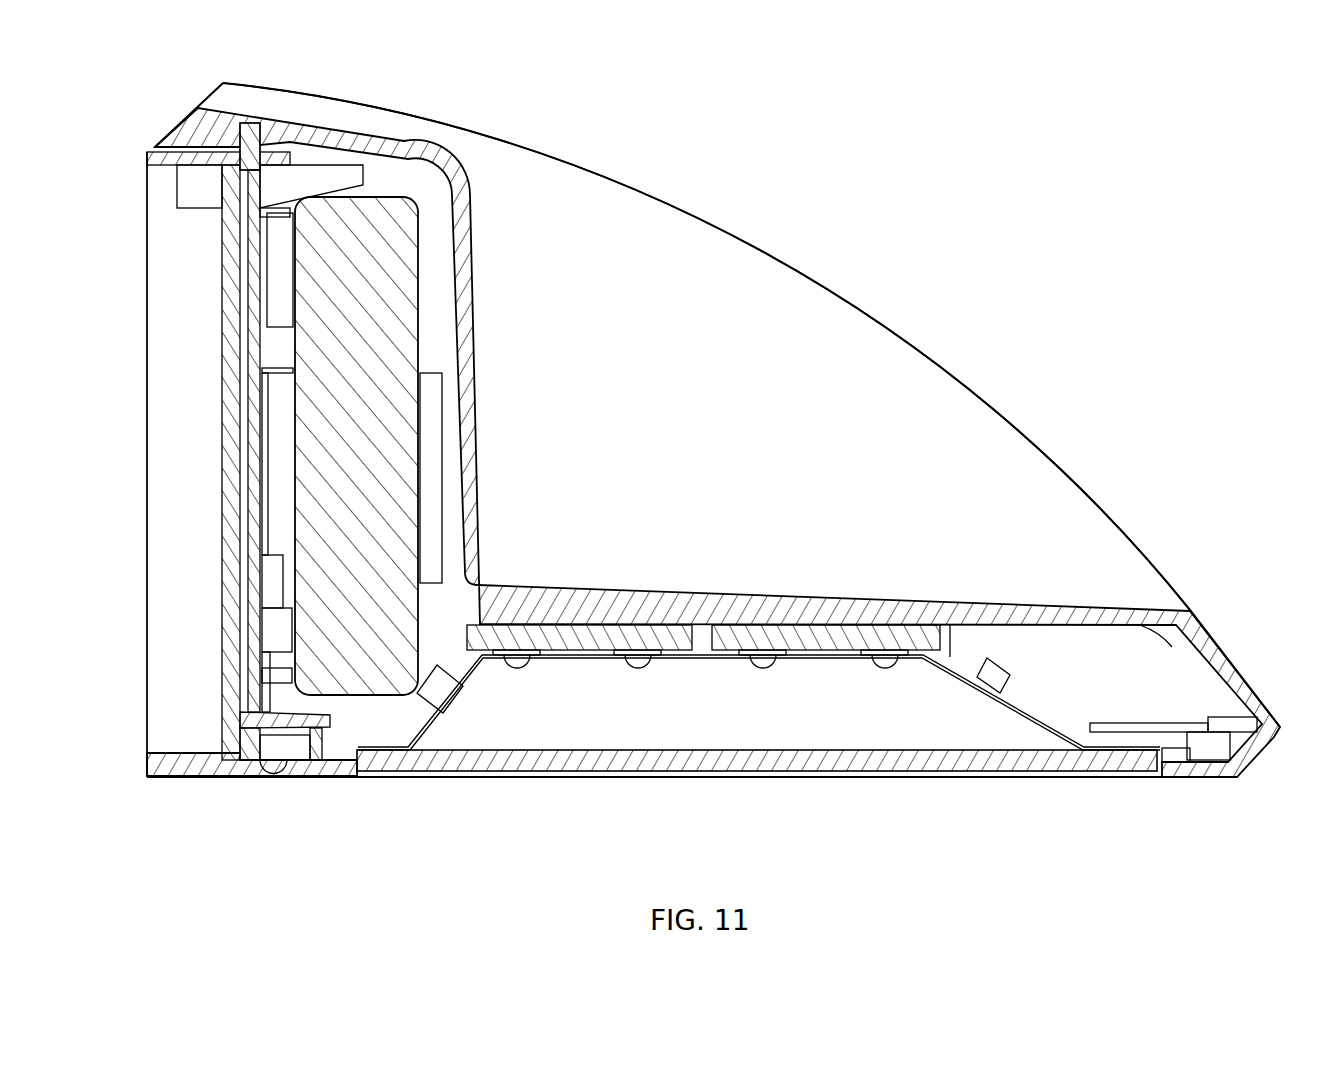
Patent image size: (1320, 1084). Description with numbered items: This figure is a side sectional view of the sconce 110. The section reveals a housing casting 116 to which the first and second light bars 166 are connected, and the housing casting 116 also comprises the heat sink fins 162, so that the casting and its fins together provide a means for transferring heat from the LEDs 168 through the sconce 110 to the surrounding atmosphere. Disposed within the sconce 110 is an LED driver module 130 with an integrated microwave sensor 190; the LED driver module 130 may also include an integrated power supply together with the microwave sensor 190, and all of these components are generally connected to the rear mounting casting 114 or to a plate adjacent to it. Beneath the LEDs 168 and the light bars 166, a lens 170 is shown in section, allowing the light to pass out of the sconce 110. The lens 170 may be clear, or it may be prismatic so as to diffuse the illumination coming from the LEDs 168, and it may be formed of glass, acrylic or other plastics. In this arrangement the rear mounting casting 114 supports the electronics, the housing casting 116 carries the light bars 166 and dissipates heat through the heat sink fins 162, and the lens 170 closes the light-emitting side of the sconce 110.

The sconce 110 is at (942, 124).
The rear mounting casting 114 is at (192, 798).
The housing casting 116 is at (530, 585).
The LED driver module 130 is at (434, 253).
The heat sink fins 162 is at (892, 330).
The light bars 166 is at (600, 632).
The LEDs 168 is at (638, 670).
The lens 170 is at (912, 772).
The microwave sensor 190 is at (436, 428).